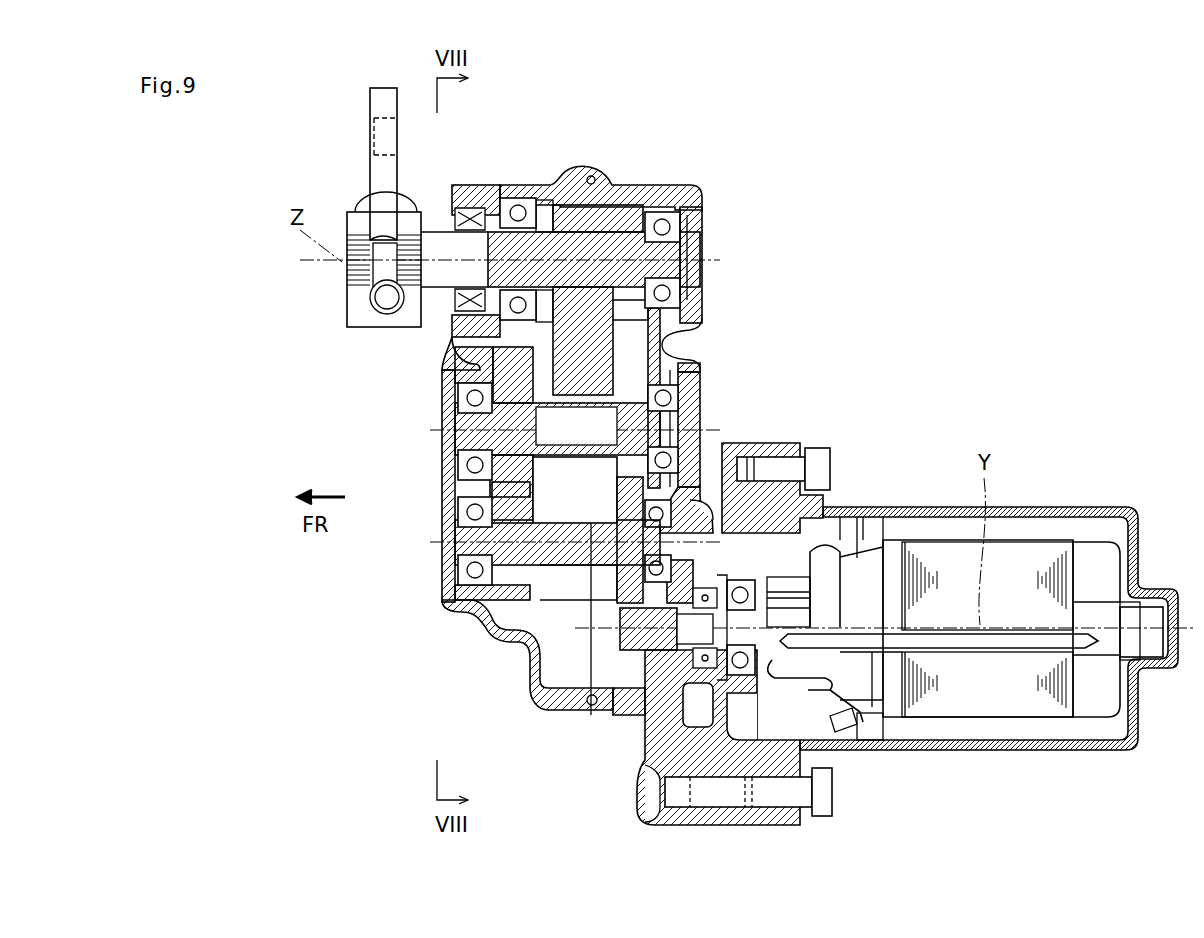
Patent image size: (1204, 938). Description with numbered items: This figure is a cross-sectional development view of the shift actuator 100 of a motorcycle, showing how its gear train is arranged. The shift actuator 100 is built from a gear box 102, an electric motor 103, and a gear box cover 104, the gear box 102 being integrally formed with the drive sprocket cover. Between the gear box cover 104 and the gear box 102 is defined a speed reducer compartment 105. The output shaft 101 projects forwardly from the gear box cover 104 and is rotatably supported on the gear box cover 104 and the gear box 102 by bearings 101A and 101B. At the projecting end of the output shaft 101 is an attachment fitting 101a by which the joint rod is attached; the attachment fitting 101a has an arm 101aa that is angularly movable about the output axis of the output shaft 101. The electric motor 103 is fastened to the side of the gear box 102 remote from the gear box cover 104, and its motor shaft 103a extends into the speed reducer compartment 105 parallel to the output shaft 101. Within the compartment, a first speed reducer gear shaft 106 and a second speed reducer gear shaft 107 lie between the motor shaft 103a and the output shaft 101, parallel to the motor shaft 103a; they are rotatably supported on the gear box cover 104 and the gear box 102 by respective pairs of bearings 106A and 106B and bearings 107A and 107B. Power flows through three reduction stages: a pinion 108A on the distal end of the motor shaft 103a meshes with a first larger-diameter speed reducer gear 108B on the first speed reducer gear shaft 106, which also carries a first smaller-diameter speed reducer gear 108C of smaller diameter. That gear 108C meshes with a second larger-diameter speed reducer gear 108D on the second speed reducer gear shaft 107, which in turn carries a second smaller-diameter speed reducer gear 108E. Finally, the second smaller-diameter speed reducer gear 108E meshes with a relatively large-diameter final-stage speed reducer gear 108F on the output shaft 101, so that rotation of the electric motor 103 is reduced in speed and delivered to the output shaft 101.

The shift actuator 100 is at (846, 150).
The output shaft 101 is at (435, 243).
The bearing 101A is at (487, 242).
The bearing 101B is at (660, 220).
The attachment fitting 101a is at (347, 302).
The arm 101aa is at (368, 178).
The gear box 102 is at (634, 724).
The electric motor 103 is at (868, 755).
The motor shaft 103a is at (628, 642).
The gear box cover 104 is at (436, 580).
The speed reducer compartment 105 is at (573, 621).
The first speed reducer gear shaft 106 is at (543, 550).
The bearing 106A is at (464, 513).
The bearing 106B is at (662, 452).
The second speed reducer gear shaft 107 is at (478, 437).
The bearing 107A is at (464, 398).
The bearing 107B is at (666, 405).
The pinion 108A is at (628, 718).
The first larger-diameter speed reducer gear 108B is at (613, 592).
The first smaller-diameter speed reducer gear 108C is at (513, 565).
The second larger-diameter speed reducer gear 108D is at (508, 492).
The second smaller-diameter speed reducer gear 108E is at (660, 388).
The final-stage speed reducer gear 108F is at (656, 346).